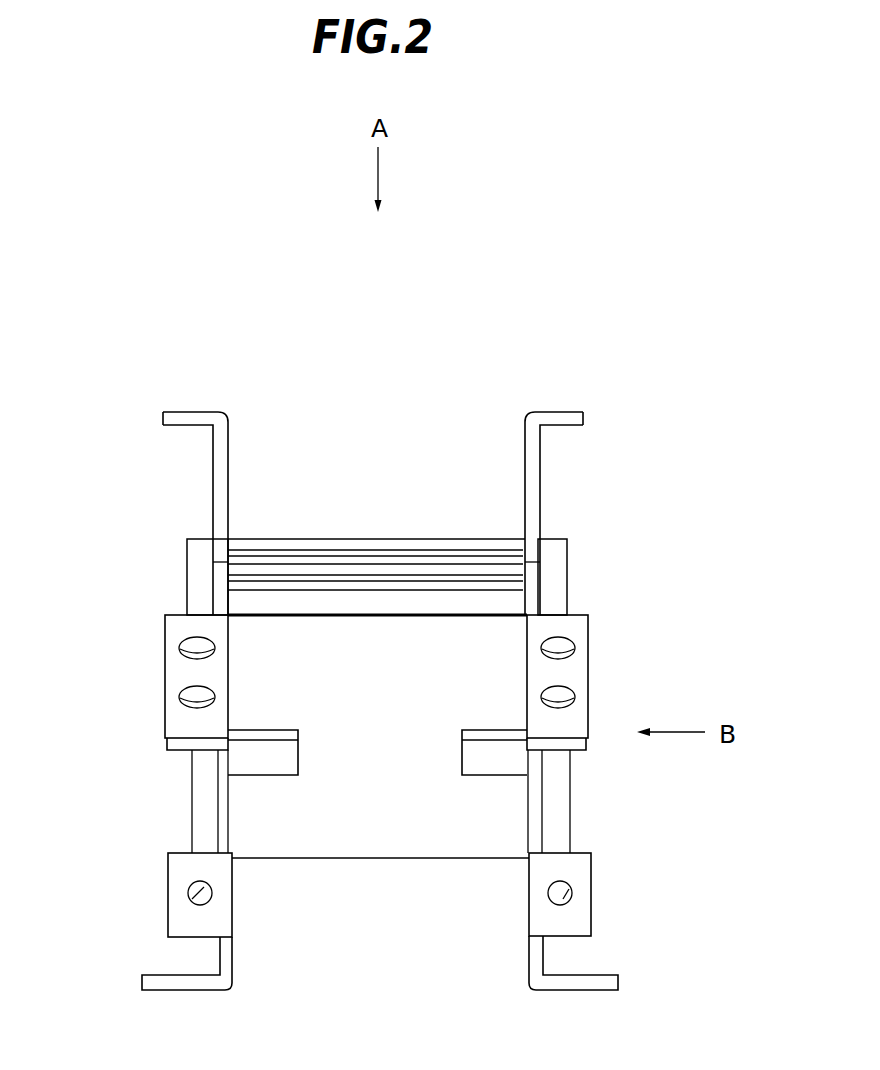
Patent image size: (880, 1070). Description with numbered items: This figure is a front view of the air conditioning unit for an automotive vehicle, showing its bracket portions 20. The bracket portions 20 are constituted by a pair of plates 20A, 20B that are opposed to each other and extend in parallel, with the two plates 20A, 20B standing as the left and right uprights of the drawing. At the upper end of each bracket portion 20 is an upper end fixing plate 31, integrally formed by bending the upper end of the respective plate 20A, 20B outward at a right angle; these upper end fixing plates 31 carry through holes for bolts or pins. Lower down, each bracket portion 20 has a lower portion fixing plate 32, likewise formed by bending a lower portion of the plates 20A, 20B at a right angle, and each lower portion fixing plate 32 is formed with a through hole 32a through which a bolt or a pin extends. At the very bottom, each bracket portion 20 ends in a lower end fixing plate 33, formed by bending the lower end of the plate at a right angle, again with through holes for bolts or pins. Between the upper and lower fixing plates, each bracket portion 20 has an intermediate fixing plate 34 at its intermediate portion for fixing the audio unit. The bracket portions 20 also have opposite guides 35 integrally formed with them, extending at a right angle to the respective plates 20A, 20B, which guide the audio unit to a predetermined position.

The bracket portion 20 is at (553, 293).
The plate 20A is at (227, 468).
The plate 20B is at (523, 452).
The upper end fixing plate 31 is at (195, 406).
The lower portion fixing plate 32 is at (168, 878).
The through hole 32a is at (203, 906).
The lower end fixing plate 33 is at (197, 992).
The intermediate fixing plate 34 is at (173, 613).
The guide 35 is at (273, 782).